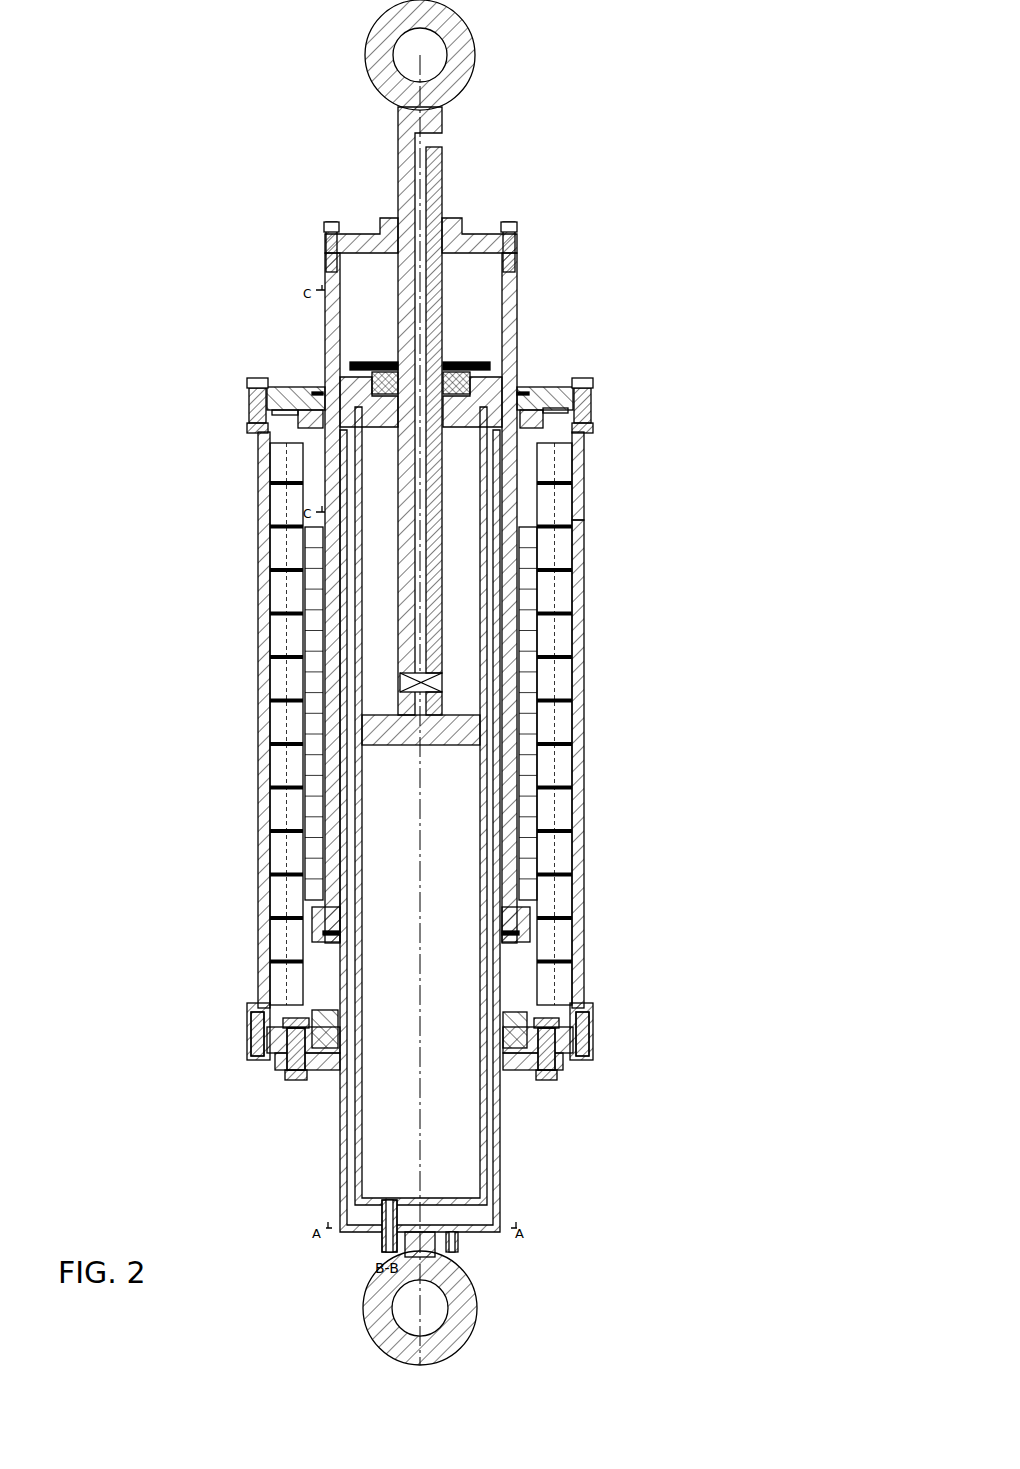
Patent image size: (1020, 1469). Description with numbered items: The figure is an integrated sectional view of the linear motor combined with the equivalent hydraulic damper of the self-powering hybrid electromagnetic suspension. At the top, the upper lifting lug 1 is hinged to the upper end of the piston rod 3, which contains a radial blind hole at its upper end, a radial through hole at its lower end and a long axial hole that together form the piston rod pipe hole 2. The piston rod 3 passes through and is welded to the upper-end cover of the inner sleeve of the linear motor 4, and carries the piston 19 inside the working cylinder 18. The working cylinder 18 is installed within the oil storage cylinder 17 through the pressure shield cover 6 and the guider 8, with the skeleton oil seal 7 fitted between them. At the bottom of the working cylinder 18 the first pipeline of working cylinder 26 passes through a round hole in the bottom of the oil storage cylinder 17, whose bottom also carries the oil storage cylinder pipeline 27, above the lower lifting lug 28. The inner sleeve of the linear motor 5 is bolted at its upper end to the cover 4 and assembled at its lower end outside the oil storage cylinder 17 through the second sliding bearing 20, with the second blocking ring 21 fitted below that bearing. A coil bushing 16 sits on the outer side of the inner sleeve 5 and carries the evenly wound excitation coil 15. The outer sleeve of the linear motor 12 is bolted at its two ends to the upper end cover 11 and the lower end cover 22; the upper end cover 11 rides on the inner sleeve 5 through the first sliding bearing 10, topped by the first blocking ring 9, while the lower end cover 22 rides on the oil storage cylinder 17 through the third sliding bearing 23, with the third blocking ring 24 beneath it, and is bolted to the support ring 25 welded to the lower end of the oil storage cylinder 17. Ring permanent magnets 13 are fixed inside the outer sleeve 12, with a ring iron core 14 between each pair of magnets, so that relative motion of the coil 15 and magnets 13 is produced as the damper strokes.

The upper lifting lug 1 is at (440, 92).
The piston rod pipe hole 2 is at (442, 140).
The piston rod 3 is at (442, 163).
The upper-end cover of the inner sleeve of the linear motor 4 is at (462, 228).
The inner sleeve of the linear motor 5 is at (465, 363).
The pressure shield cover 6 is at (471, 376).
The skeleton oil seal 7 is at (482, 392).
The guider 8 is at (512, 395).
The first blocking ring 9 is at (578, 392).
The first sliding bearing 10 is at (594, 403).
The upper end cover 11 is at (547, 423).
The outer sleeve of the linear motor 12 is at (582, 477).
The permanent magnet 13 is at (562, 515).
The iron core 14 is at (582, 537).
The excitation coil 15 is at (549, 572).
The coil bushing 16 is at (533, 600).
The oil storage cylinder 17 is at (510, 625).
The working cylinder 18 is at (497, 690).
The piston 19 is at (470, 733).
The second sliding bearing 20 is at (527, 937).
The second blocking ring 21 is at (515, 933).
The lower end cover 22 is at (567, 1048).
The third sliding bearing 23 is at (565, 1068).
The third blocking ring 24 is at (553, 1073).
The support ring 25 is at (522, 1070).
The first pipeline of working cylinder 26 is at (398, 1248).
The oil storage cylinder pipeline 27 is at (458, 1247).
The lower lifting lug 28 is at (457, 1337).